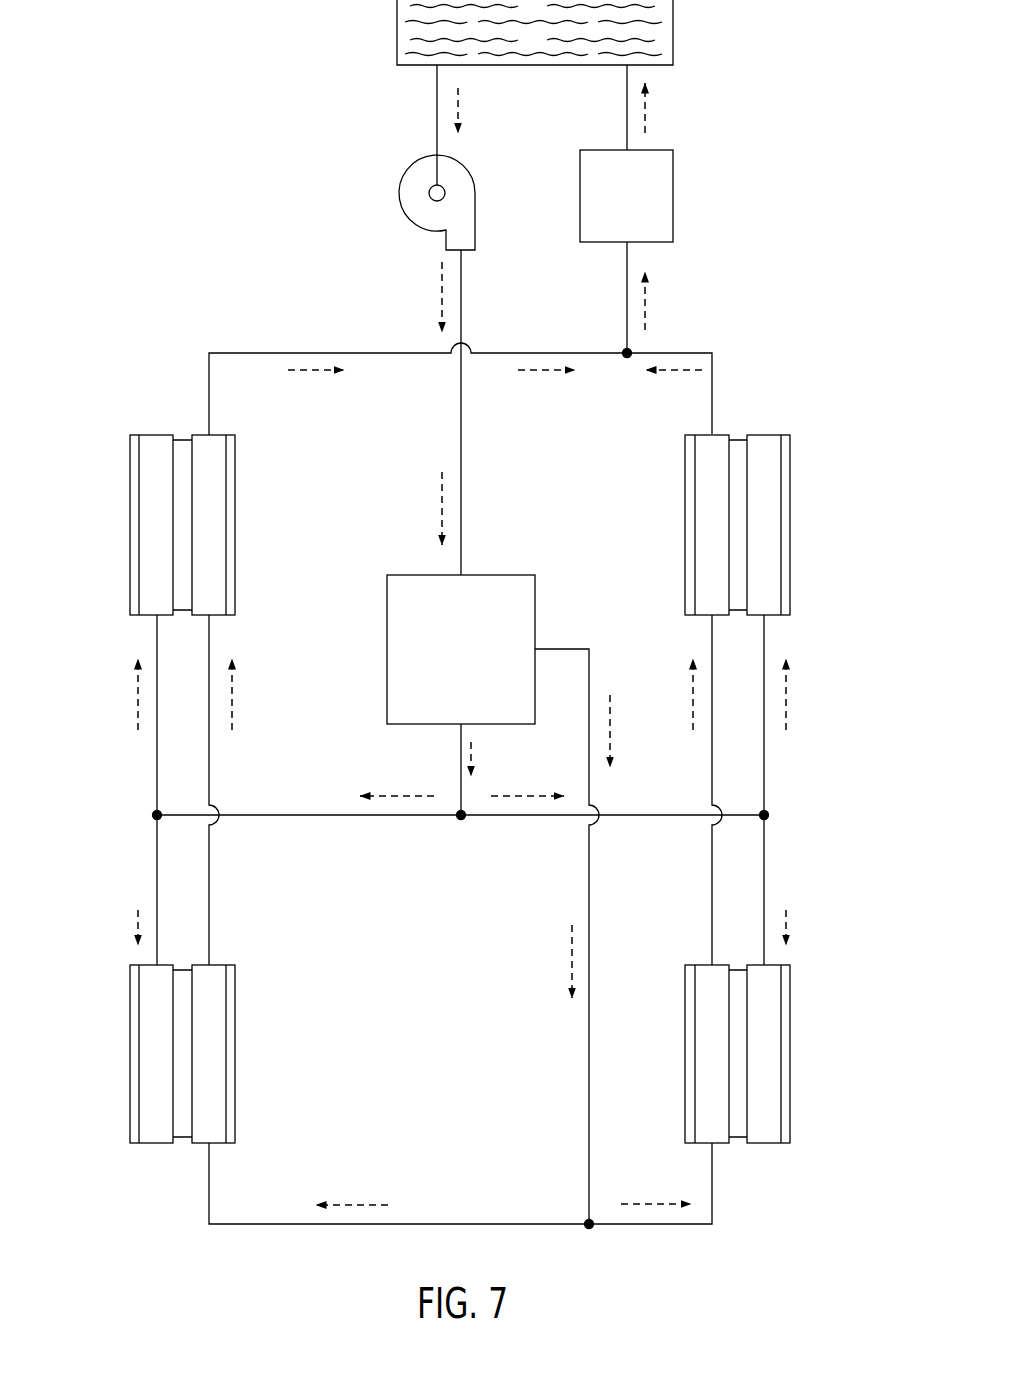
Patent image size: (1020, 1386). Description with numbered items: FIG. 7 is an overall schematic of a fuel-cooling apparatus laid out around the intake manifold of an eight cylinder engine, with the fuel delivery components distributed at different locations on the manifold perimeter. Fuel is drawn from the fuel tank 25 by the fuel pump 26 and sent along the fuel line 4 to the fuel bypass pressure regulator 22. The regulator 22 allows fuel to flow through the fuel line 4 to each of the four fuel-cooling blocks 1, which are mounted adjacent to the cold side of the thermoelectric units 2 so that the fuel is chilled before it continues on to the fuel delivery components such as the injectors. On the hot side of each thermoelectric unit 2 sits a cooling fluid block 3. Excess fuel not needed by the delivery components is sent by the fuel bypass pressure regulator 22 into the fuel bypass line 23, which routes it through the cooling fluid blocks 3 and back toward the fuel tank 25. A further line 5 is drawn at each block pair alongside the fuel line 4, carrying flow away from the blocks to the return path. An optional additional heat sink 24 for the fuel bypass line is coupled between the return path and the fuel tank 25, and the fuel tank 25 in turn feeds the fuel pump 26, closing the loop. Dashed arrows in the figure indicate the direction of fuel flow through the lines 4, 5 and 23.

The fuel-cooling block 1 is at (128, 454).
The thermoelectric unit 2 is at (183, 436).
The cooling fluid block 3 is at (230, 522).
The fuel line 4 is at (461, 420).
The coolant return line 5 is at (209, 762).
The fuel bypass pressure regulator 22 is at (387, 650).
The fuel bypass line 23 is at (566, 648).
The heat sink 24 is at (674, 200).
The fuel tank 25 is at (398, 44).
The fuel pump 26 is at (399, 194).